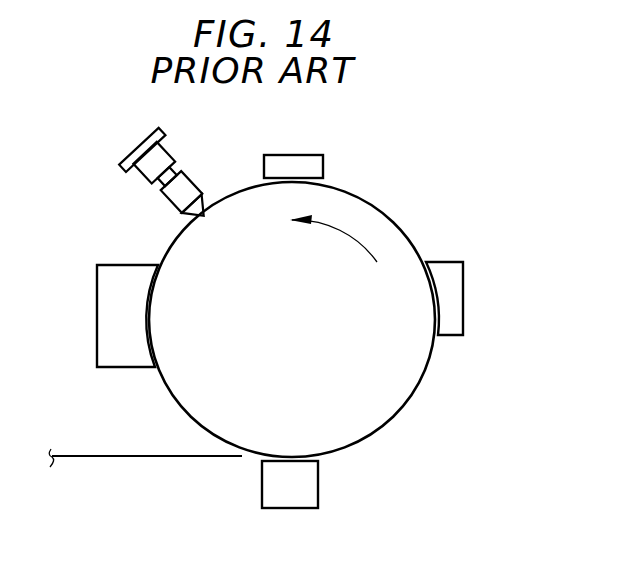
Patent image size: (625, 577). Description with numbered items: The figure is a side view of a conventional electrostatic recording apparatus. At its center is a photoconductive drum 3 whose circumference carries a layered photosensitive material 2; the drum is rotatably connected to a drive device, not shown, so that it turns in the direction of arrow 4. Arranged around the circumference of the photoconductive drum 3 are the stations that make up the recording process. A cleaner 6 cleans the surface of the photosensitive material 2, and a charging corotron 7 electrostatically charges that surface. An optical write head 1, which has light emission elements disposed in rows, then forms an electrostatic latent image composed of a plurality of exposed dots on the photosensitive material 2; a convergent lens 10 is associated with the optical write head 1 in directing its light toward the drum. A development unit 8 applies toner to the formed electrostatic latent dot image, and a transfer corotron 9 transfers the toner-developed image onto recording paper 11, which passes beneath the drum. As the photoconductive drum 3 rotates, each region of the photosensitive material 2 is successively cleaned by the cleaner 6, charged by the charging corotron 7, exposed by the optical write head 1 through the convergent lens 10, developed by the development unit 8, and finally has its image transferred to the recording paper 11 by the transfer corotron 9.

The optical write head 1 is at (148, 157).
The photosensitive material 2 is at (243, 190).
The photoconductive drum 3 is at (180, 256).
The arrow 4 is at (333, 232).
The cleaner 6 is at (458, 298).
The charging corotron 7 is at (288, 162).
The development unit 8 is at (110, 319).
The transfer corotron 9 is at (308, 482).
The convergent lens 10 is at (175, 192).
The recording paper 11 is at (128, 457).